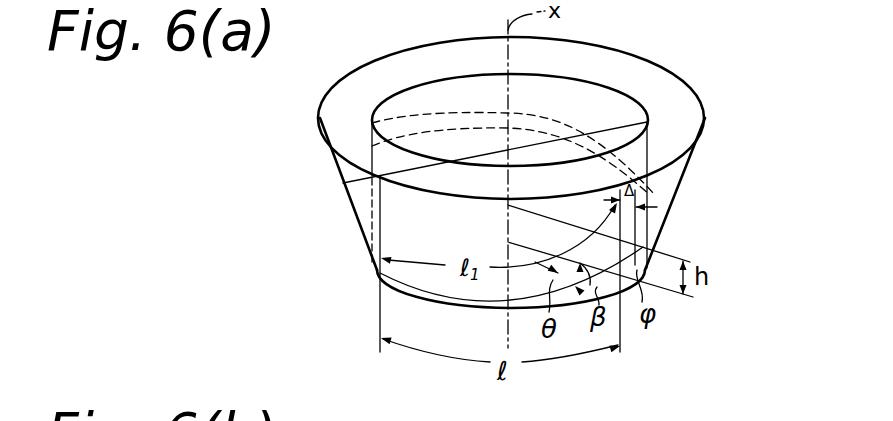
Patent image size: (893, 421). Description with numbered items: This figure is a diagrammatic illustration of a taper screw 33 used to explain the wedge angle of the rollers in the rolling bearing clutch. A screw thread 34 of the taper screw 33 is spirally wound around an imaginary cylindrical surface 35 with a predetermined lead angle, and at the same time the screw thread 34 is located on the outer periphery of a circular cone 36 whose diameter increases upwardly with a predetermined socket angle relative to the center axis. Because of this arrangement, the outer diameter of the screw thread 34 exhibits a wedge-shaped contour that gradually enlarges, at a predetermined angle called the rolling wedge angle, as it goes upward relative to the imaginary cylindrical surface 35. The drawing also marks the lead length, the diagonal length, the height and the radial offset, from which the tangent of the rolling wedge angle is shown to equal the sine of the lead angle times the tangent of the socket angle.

The taper screw 33 is at (645, 57).
The screw thread 34 is at (660, 233).
The imaginary cylindrical surface 35 is at (652, 136).
The circular cone 36 is at (684, 177).